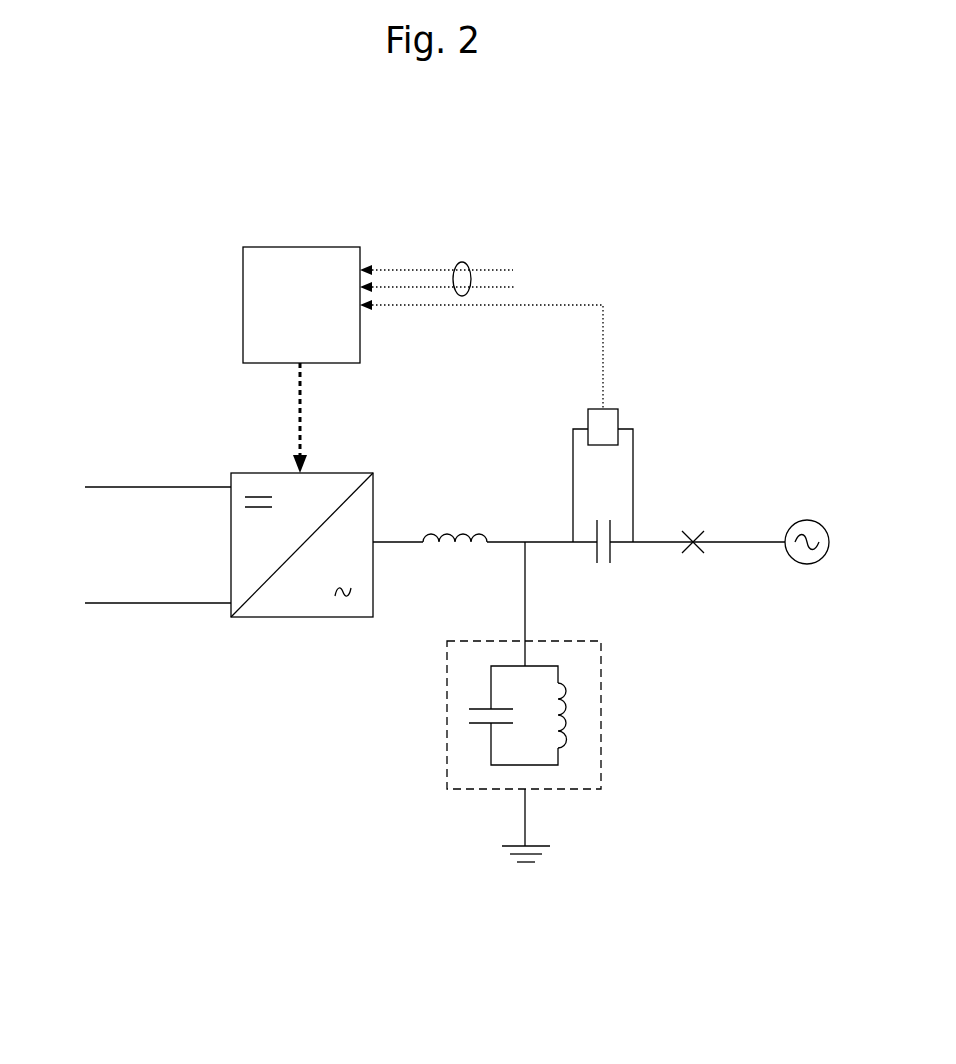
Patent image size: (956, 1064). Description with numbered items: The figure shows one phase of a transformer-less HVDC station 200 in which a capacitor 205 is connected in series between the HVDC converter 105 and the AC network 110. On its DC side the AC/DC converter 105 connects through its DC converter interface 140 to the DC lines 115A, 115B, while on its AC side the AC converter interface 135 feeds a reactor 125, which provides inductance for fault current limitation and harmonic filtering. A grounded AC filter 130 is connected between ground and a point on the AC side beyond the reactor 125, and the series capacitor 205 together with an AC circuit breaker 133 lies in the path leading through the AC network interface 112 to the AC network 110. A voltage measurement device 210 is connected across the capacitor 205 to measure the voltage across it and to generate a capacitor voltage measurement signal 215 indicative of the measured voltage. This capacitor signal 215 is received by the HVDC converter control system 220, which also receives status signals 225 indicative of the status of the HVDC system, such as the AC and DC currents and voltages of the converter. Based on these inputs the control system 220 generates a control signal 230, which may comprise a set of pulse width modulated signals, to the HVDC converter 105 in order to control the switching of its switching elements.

The transformer-less HVDC station 200 is at (353, 765).
The HVDC converter control system 220 is at (243, 305).
The status signals 225 is at (462, 262).
The capacitor voltage measurement signal 215 is at (498, 308).
The voltage measurement device 210 is at (618, 417).
The capacitor 205 is at (617, 553).
The AC network interface 112 is at (757, 538).
The AC circuit breaker 133 is at (693, 524).
The AC network 110 is at (800, 565).
The AC converter interface 135 is at (378, 537).
The reactor 125 is at (446, 553).
The AC/DC converter 105 is at (297, 620).
The DC converter interface 140 is at (222, 494).
The DC line 115A is at (138, 484).
The DC line 115B is at (143, 604).
The control signal 230 is at (304, 410).
The AC filter 130 is at (601, 755).